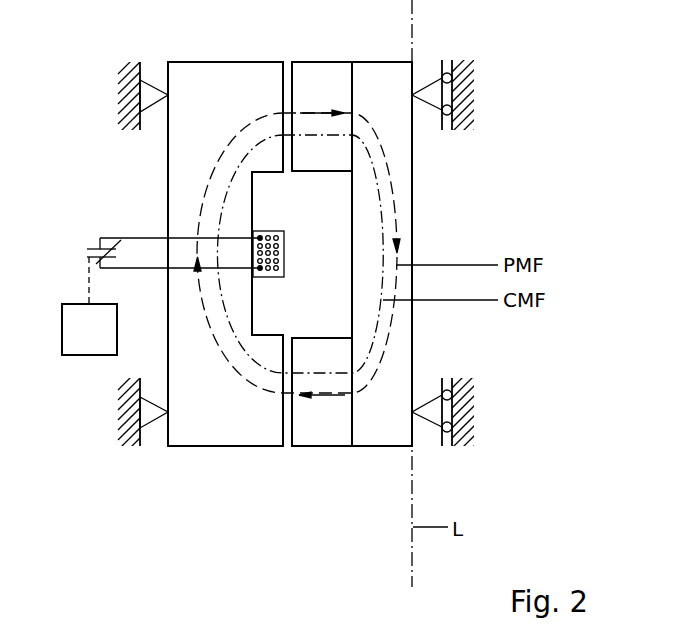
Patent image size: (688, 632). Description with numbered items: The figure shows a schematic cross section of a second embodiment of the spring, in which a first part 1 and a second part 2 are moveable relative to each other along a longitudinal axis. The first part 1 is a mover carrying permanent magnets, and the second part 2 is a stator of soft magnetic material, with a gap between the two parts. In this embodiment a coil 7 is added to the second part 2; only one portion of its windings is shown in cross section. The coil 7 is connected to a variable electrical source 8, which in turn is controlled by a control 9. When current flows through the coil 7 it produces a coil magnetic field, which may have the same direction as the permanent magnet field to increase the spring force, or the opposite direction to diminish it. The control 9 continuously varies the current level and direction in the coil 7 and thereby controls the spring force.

The first part 1 is at (367, 466).
The second part 2 is at (213, 466).
The coil 7 is at (307, 235).
The variable electrical source 8 is at (80, 232).
The control 9 is at (62, 330).